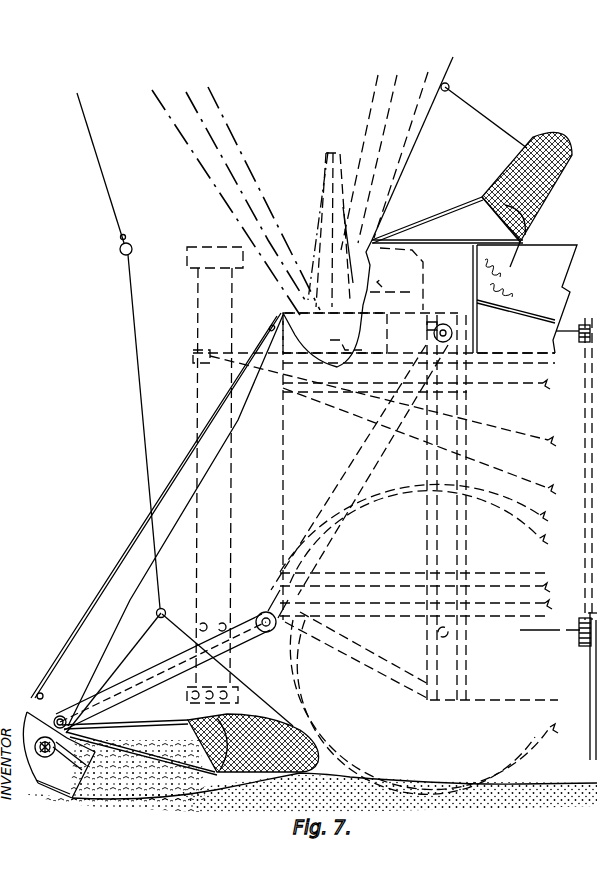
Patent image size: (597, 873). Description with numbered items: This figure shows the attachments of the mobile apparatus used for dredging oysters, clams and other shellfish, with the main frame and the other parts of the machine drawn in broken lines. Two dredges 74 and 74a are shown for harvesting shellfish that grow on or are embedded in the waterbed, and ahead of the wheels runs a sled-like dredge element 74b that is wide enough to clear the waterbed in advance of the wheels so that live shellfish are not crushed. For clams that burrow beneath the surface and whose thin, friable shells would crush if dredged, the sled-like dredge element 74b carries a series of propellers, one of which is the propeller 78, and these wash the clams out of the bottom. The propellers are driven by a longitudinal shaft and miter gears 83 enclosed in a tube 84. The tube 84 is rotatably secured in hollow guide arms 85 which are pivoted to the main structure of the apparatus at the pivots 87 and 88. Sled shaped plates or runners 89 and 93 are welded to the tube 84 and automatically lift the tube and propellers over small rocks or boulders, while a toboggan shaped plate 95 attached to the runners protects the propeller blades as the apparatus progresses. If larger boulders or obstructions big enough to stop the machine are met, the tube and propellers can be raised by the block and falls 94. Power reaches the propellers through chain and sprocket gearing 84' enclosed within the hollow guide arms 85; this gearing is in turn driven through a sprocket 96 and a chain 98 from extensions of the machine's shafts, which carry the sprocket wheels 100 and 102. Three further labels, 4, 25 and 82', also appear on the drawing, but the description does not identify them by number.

The sheave 4 is at (428, 334).
The boom 25 is at (205, 468).
The dredge 74 is at (320, 762).
The dredge 74a is at (477, 162).
The sled-like dredge element 74b is at (25, 712).
The propeller 78 is at (89, 766).
The pivot pin 82' is at (51, 710).
The miter gears 83 is at (42, 742).
The tube 84 is at (66, 761).
The chain and sprocket gearing 84' is at (113, 673).
The hollow guide arm 85 is at (150, 678).
The pivot 87 is at (579, 638).
The pivot 88 is at (271, 631).
The sled shaped plate or runner 89 is at (308, 788).
The sled shaped plate or runner 93 is at (113, 737).
The block and falls 94 is at (68, 642).
The toboggan shaped plate 95 is at (50, 788).
The sprocket 96 is at (582, 622).
The chain 98 is at (393, 428).
The sprocket wheel 100 is at (573, 331).
The sprocket wheel 102 is at (525, 299).